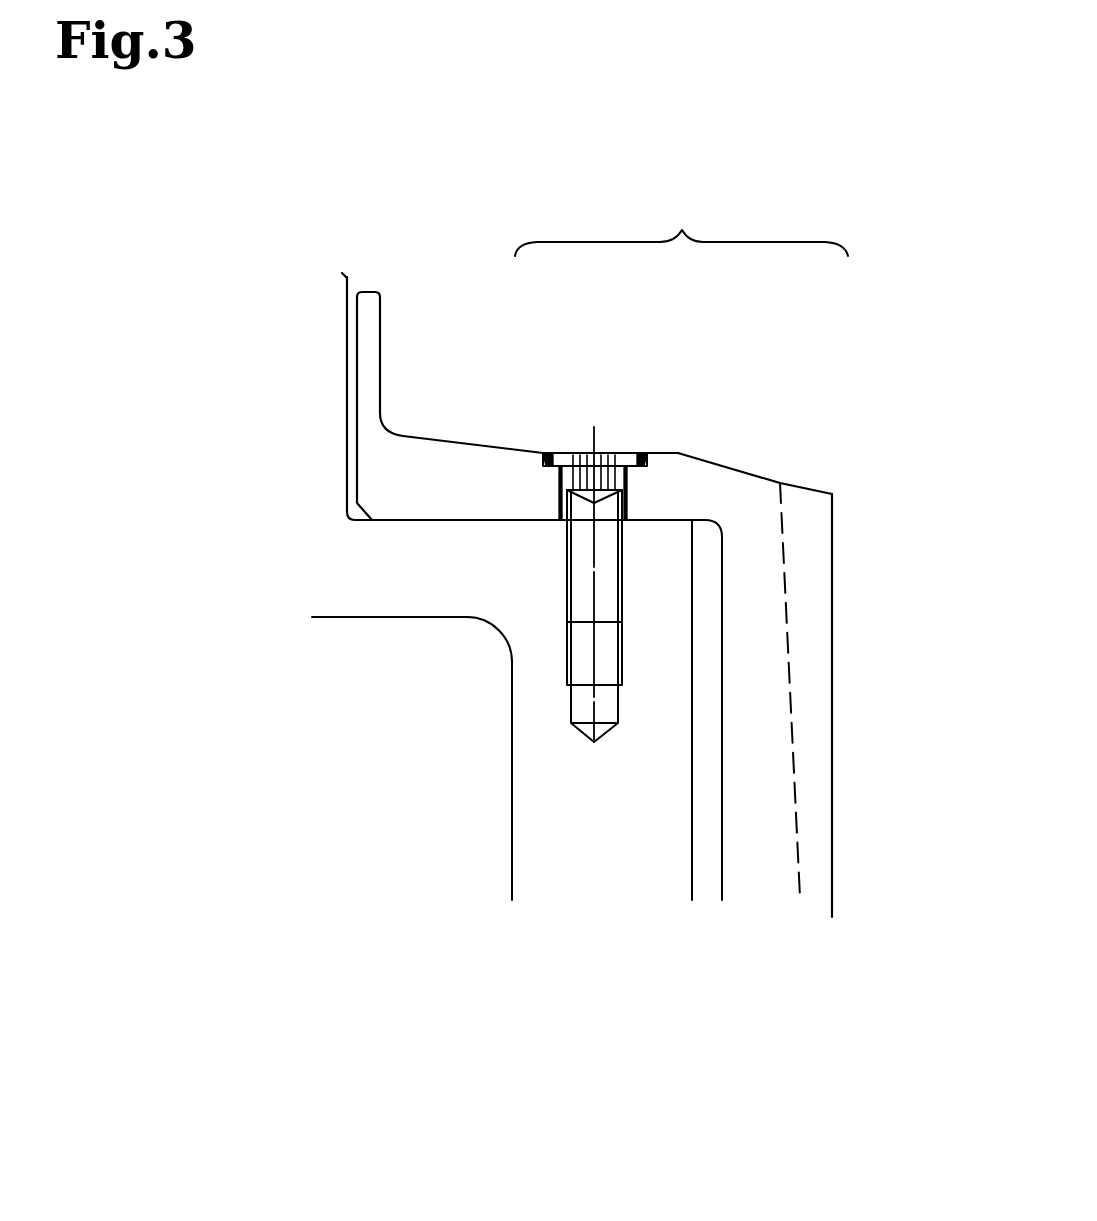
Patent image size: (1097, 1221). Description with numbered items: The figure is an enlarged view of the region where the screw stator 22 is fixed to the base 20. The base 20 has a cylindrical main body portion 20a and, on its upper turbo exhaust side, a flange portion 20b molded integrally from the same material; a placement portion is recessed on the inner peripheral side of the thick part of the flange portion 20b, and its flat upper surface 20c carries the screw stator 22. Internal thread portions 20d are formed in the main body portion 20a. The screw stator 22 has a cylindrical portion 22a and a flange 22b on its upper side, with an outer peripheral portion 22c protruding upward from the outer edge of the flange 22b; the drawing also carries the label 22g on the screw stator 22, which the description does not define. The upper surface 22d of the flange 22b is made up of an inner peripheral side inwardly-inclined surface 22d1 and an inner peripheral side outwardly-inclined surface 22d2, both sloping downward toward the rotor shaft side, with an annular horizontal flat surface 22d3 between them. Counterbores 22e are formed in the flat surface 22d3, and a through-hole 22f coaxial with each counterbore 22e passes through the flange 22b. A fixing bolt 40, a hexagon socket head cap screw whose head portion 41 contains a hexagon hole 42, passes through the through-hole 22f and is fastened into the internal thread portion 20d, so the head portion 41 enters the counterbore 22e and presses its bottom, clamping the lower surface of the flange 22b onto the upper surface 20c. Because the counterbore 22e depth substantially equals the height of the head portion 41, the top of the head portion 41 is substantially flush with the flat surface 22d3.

The base 20 is at (550, 649).
The main body portion 20a is at (558, 798).
The flange portion 20b is at (340, 554).
The upper surface 20c is at (548, 462).
The internal thread portion 20d is at (627, 602).
The screw stator 22 is at (579, 575).
The cylindrical portion 22a is at (757, 745).
The flange 22b is at (433, 487).
The outer peripheral portion 22c is at (365, 333).
The upper surface 22d is at (681, 218).
The inner peripheral side inwardly-inclined surface 22d1 is at (740, 467).
The inner peripheral side outwardly-inclined surface 22d2 is at (447, 440).
The flat surface 22d3 is at (660, 452).
The counterbore 22e is at (562, 472).
The through-hole 22f is at (562, 517).
The bracket outer surface 22g is at (813, 797).
The fixing bolt 40 is at (568, 665).
The head portion 41 is at (570, 488).
The hexagon hole 42 is at (608, 475).